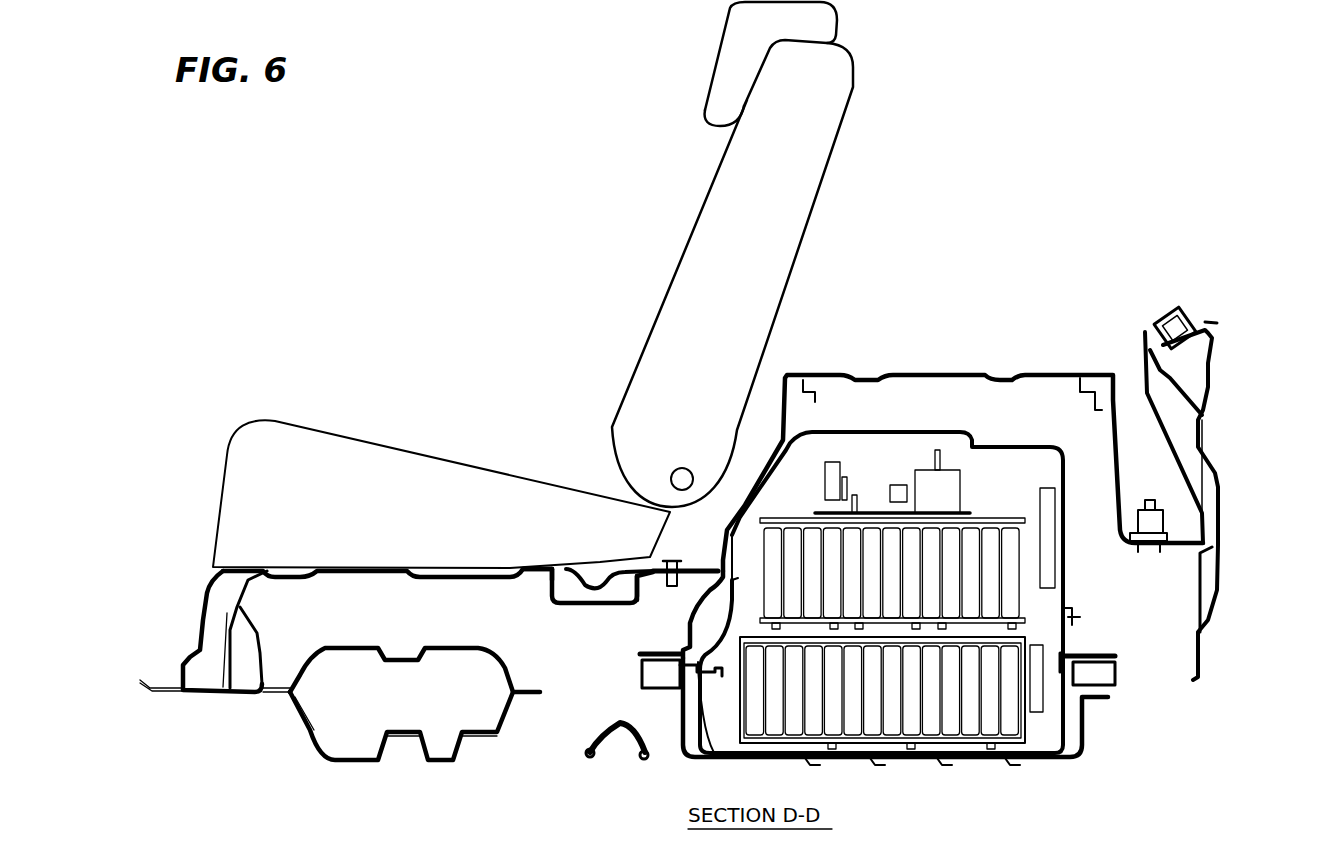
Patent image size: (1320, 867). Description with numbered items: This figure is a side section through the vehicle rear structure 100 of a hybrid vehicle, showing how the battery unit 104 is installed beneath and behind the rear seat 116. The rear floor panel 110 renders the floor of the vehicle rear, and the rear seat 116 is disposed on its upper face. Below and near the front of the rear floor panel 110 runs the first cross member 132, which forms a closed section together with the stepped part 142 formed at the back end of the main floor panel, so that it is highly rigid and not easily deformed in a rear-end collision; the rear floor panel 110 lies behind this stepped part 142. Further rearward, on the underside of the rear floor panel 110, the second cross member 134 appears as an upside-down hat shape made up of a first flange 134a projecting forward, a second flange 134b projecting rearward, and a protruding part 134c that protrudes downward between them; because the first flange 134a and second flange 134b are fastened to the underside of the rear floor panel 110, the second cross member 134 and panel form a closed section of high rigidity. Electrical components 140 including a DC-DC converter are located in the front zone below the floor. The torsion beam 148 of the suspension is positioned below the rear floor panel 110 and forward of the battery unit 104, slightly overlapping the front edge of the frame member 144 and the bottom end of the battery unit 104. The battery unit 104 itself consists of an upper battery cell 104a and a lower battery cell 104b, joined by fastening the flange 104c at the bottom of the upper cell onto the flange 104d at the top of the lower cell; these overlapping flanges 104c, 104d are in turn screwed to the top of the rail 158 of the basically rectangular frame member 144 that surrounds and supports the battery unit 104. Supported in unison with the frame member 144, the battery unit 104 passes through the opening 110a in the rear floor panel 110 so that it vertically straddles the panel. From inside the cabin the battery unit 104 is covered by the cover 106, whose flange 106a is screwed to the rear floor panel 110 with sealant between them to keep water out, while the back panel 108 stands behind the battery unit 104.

The vehicle rear structure 100 is at (1019, 247).
The battery unit 104 is at (879, 462).
The upper battery cell 104a is at (985, 548).
The lower battery cell 104b is at (962, 703).
The flange 104c is at (1093, 654).
The flange 104d is at (1110, 660).
The cover 106 is at (1008, 373).
The flange 106a is at (694, 563).
The back panel 108 is at (1212, 385).
The rear floor panel 110 is at (447, 581).
The opening 110a is at (731, 585).
The rear seat 116 is at (416, 470).
The first cross member 132 is at (222, 700).
The second cross member 134 is at (597, 605).
The first flange 134a is at (546, 580).
The second flange 134b is at (654, 578).
The protruding part 134c is at (609, 571).
The electrical components 140 is at (316, 728).
The stepped part 142 is at (220, 622).
The frame member 144 is at (633, 676).
The torsion beam 148 is at (630, 738).
The rail 158 is at (1100, 678).